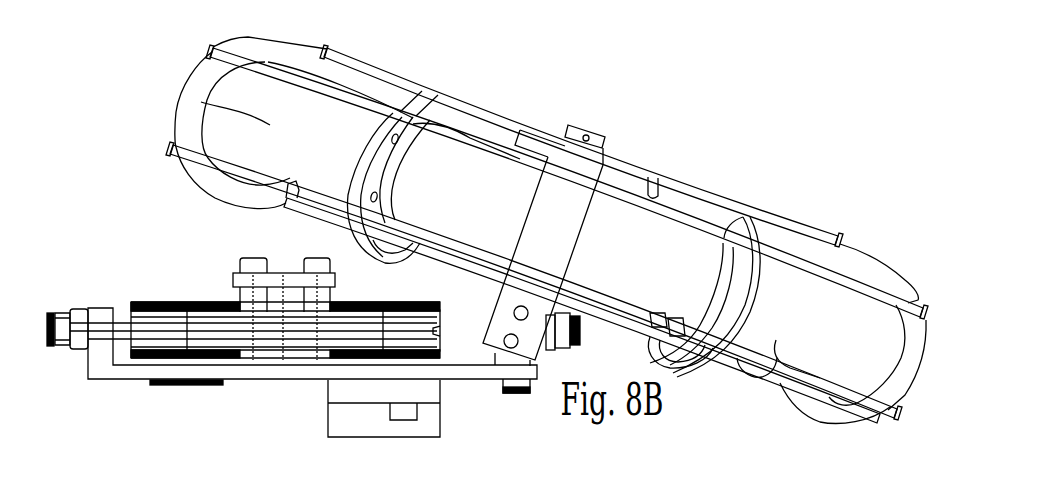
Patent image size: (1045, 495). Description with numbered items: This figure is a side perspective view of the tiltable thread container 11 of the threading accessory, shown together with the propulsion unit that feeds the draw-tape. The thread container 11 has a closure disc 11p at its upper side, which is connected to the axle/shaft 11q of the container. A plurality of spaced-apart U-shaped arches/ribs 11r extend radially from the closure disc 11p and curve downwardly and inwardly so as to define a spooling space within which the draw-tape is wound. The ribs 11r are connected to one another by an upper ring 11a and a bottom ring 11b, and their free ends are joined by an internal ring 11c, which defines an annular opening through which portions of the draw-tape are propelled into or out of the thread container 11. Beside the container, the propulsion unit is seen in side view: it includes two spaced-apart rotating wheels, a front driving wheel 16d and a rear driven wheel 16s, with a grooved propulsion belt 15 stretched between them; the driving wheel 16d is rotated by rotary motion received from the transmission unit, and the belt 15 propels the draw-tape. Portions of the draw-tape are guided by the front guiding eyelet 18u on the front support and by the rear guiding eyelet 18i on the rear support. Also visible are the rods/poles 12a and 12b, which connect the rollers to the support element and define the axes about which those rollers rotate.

The tiltable thread container 11 is at (605, 164).
The upper ring 11a is at (835, 283).
The bottom ring 11b is at (627, 310).
The internal ring 11c is at (747, 367).
The closure disc 11p is at (520, 140).
The axle/shaft 11q is at (522, 233).
The U-shaped arches/ribs 11r is at (365, 150).
The rod/pole 12a is at (240, 290).
The rod/pole 12b is at (310, 297).
The grooved propulsion belt 15 is at (267, 330).
The front driving wheel 16d is at (160, 303).
The rear driven wheel 16s is at (388, 305).
The front guiding eyelet 18u is at (60, 309).
The rear guiding eyelet 18i is at (580, 335).